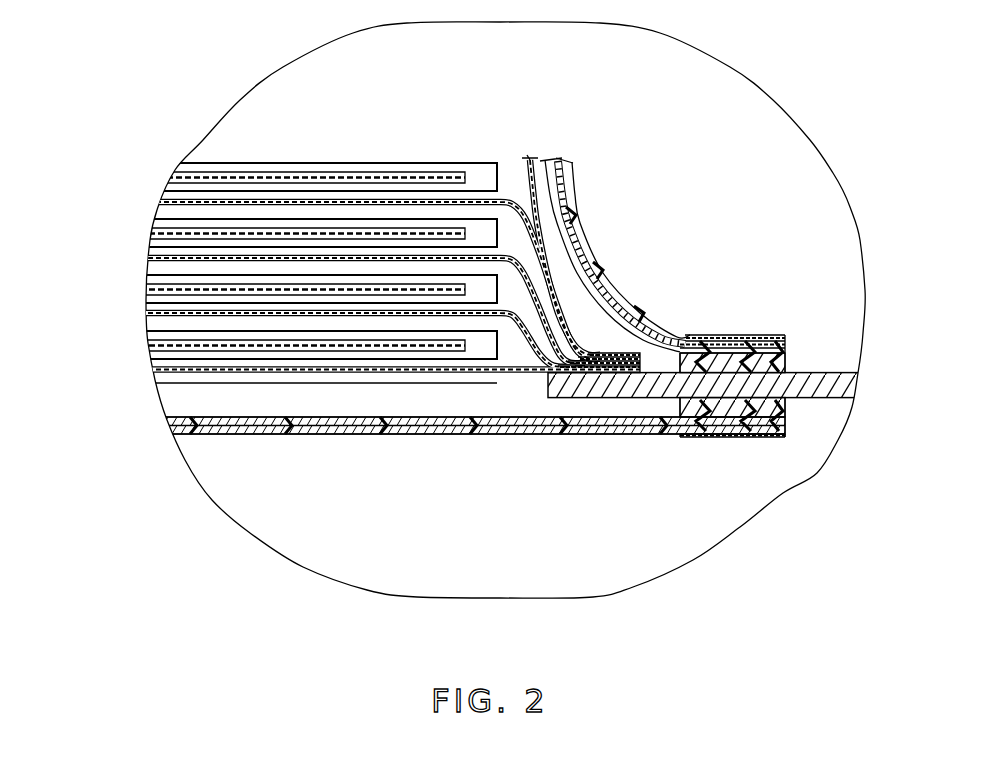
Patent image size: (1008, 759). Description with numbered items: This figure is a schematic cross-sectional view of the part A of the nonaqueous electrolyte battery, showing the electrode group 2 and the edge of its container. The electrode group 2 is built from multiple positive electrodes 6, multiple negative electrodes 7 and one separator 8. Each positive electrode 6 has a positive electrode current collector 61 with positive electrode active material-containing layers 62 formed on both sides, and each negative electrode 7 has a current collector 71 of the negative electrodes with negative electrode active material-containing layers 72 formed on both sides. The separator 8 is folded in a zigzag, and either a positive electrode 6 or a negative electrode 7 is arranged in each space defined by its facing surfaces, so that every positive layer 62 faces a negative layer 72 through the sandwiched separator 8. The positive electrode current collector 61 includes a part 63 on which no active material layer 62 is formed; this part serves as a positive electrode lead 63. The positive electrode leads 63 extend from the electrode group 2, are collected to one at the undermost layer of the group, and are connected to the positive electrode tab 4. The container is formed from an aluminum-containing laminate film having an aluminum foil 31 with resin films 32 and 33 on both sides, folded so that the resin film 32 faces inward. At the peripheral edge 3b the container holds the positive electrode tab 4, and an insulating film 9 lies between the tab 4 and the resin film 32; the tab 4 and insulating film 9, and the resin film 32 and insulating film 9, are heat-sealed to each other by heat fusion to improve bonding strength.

The electrode group 2 is at (469, 127).
The peripheral edge 3b is at (485, 345).
The positive electrode tab 4 is at (831, 373).
The positive electrode 6 is at (347, 307).
The negative electrode 7 is at (275, 248).
The separator 8 is at (405, 162).
The insulating film 9 is at (780, 363).
The aluminum foil 31 is at (731, 341).
The resin film 32 is at (667, 285).
The resin film 33 is at (683, 336).
The positive electrode current collector 61 is at (154, 376).
The positive electrode active material-containing layer 62 is at (158, 381).
The positive electrode lead 63 is at (522, 373).
The current collector of negative electrodes 71 is at (90, 297).
The negative electrode active material-containing layer 72 is at (150, 353).
The part A is at (569, 598).